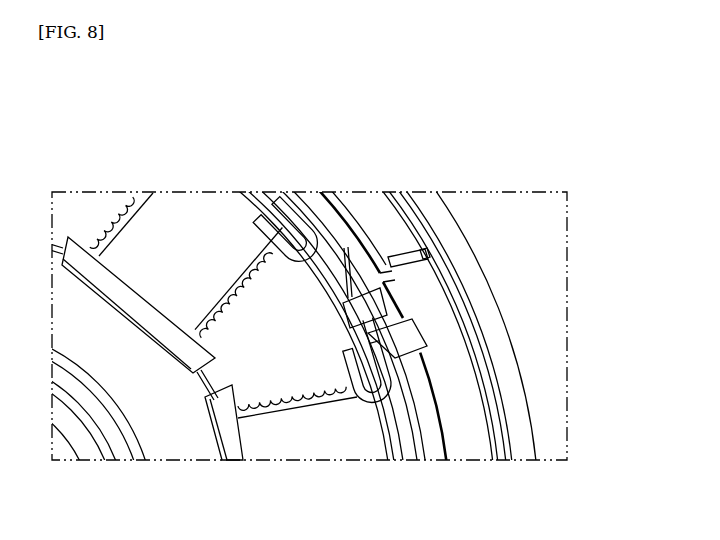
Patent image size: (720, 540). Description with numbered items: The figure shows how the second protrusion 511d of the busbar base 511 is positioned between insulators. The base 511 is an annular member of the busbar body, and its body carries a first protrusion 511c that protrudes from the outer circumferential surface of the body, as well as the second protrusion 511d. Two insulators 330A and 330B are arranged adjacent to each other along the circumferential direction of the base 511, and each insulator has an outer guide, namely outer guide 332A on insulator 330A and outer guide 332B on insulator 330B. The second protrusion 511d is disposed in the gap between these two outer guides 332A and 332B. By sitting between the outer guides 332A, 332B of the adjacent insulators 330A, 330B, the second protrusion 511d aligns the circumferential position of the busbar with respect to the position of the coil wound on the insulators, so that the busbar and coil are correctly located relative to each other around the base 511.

The insulator 330A is at (183, 240).
The insulator 330B is at (320, 440).
The outer guide 332A is at (300, 207).
The outer guide 332B is at (412, 319).
The base 511 is at (387, 307).
The first protrusion 511c is at (390, 255).
The second protrusion 511d is at (345, 248).